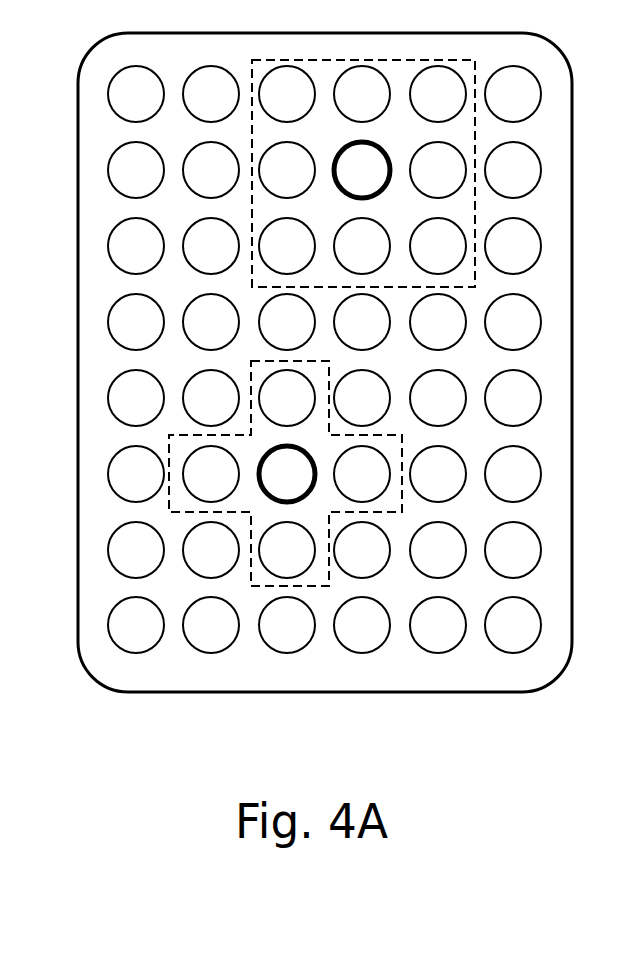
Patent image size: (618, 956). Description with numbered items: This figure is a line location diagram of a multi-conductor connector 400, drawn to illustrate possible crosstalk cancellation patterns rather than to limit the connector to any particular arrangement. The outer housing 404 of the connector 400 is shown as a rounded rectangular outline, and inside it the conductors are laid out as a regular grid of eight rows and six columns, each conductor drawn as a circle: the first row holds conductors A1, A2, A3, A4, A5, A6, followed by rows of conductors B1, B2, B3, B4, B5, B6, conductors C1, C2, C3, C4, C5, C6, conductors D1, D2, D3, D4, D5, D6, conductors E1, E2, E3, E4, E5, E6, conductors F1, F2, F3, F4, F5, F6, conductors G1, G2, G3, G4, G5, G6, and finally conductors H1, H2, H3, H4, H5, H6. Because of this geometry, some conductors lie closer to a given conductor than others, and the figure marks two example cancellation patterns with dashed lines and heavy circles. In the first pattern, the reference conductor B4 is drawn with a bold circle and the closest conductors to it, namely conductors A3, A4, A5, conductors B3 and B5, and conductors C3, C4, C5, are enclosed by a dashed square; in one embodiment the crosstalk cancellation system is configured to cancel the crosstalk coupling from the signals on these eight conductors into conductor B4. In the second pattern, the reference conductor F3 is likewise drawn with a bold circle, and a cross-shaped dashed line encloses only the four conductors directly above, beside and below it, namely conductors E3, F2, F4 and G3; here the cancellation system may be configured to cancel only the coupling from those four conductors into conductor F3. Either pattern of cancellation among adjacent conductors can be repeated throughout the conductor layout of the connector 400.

The connector 400 is at (296, 411).
The outer housing 404 is at (195, 692).
The conductor A1 is at (136, 94).
The conductor A2 is at (211, 94).
The conductor A3 is at (287, 94).
The conductor A4 is at (362, 94).
The conductor A5 is at (438, 94).
The conductor A6 is at (513, 94).
The conductor B1 is at (136, 170).
The conductor B2 is at (211, 170).
The conductor B3 is at (287, 170).
The conductor B4 is at (362, 170).
The conductor B5 is at (438, 170).
The conductor B6 is at (513, 170).
The conductor C1 is at (136, 246).
The conductor C2 is at (211, 246).
The conductor C3 is at (287, 246).
The conductor C4 is at (362, 246).
The conductor C5 is at (438, 246).
The conductor C6 is at (513, 246).
The conductor D1 is at (136, 322).
The conductor D2 is at (211, 322).
The conductor D3 is at (287, 322).
The conductor D4 is at (362, 322).
The conductor D5 is at (438, 322).
The conductor D6 is at (513, 322).
The conductor E1 is at (136, 398).
The conductor E2 is at (211, 398).
The conductor E3 is at (287, 398).
The conductor E4 is at (362, 398).
The conductor E5 is at (438, 398).
The conductor E6 is at (513, 398).
The conductor F1 is at (136, 474).
The conductor F2 is at (211, 474).
The conductor F3 is at (287, 474).
The conductor F4 is at (362, 474).
The conductor F5 is at (438, 474).
The conductor F6 is at (513, 474).
The conductor G1 is at (136, 550).
The conductor G2 is at (211, 550).
The conductor G3 is at (287, 550).
The conductor G4 is at (362, 550).
The conductor G5 is at (438, 550).
The conductor G6 is at (513, 550).
The conductor H1 is at (136, 625).
The conductor H2 is at (211, 625).
The conductor H3 is at (287, 625).
The conductor H4 is at (362, 625).
The conductor H5 is at (438, 625).
The conductor H6 is at (513, 625).